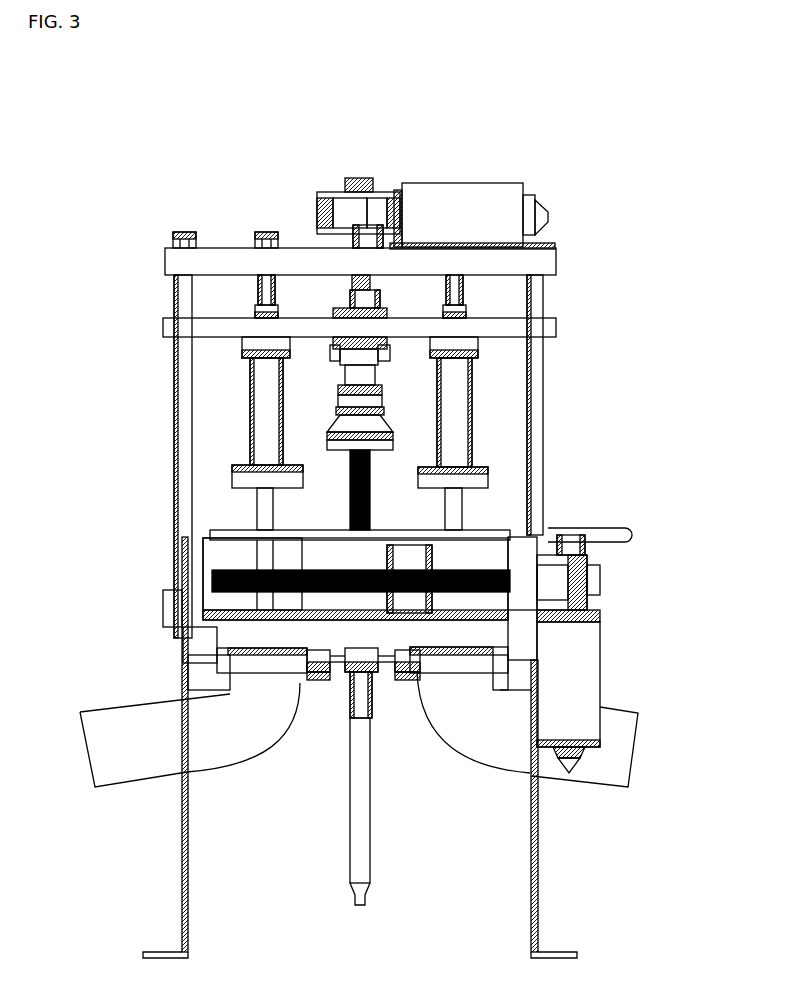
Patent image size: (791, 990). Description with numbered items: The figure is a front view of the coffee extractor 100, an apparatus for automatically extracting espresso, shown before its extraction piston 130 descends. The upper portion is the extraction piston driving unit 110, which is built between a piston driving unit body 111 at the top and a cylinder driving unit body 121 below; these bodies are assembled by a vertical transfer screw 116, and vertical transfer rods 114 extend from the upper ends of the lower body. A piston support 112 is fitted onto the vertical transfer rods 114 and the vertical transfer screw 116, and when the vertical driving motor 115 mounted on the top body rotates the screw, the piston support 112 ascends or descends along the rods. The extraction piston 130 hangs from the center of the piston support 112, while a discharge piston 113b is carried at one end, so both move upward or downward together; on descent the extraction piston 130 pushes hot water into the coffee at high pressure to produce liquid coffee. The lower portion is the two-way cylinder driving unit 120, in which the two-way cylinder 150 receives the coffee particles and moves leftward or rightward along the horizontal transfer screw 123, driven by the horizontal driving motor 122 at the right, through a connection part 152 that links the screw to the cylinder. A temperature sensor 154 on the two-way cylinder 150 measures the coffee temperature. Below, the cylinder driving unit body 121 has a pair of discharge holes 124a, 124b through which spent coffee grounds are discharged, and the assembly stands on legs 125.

The coffee extractor 100 is at (163, 160).
The extraction piston driving unit 110 is at (574, 222).
The piston driving unit body 111 is at (220, 262).
The piston support 112 is at (195, 326).
The discharge piston 113b is at (455, 426).
The vertical transfer rods 114 is at (190, 441).
The vertical driving motor 115 is at (468, 197).
The vertical transfer screw 116 is at (365, 490).
The two-way cylinder driving unit 120 is at (582, 823).
The cylinder driving unit body 121 is at (238, 635).
The horizontal driving motor 122 is at (580, 683).
The horizontal transfer screw 123 is at (238, 568).
The discharge hole 124a is at (135, 727).
The discharge hole 124b is at (620, 730).
The support leg 125 is at (182, 850).
The extraction piston 130 is at (352, 350).
The two-way cylinder 150 is at (323, 563).
The connection part 152 is at (402, 577).
The temperature sensor 154 is at (623, 540).